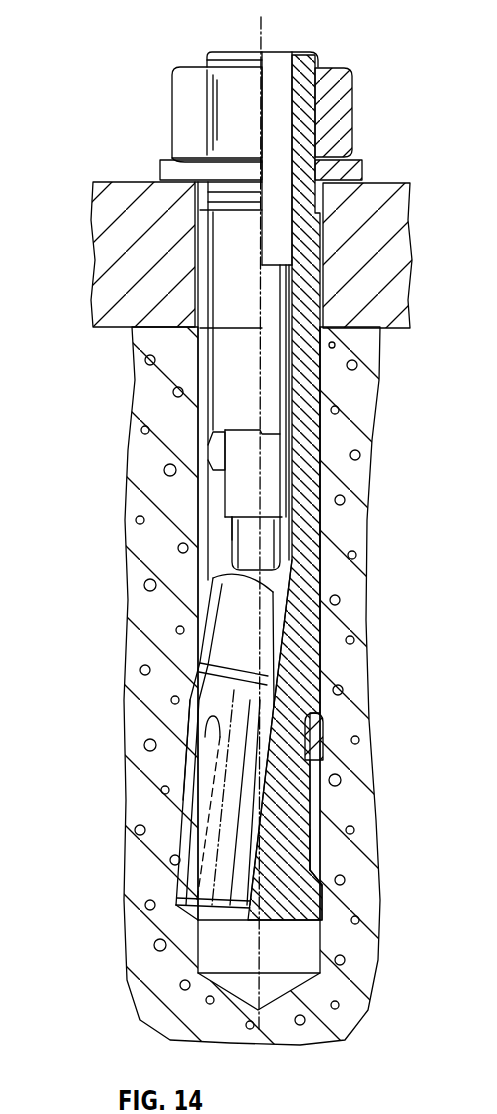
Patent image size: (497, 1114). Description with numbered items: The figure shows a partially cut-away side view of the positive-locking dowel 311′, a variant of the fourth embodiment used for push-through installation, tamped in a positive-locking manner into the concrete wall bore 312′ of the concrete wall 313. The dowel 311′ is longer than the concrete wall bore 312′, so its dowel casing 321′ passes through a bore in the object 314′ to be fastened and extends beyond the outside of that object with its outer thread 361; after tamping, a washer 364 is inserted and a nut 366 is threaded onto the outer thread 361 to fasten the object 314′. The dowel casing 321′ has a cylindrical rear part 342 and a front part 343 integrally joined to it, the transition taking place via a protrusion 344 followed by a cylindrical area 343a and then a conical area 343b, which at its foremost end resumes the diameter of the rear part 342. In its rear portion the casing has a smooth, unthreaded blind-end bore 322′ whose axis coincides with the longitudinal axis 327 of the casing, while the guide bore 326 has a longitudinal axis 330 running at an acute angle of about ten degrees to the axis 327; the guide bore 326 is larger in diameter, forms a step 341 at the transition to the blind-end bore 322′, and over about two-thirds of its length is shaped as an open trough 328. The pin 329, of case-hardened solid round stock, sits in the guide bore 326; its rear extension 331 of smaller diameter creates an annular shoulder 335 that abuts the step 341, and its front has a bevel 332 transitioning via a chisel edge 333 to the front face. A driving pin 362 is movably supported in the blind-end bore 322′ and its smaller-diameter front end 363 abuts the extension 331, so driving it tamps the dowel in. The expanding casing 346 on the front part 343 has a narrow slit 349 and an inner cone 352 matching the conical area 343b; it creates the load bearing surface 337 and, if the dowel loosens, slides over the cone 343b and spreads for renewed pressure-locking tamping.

The longitudinal axis 327 is at (266, 36).
The outer thread 361 is at (318, 62).
The nut 366 is at (343, 110).
The washer 364 is at (352, 172).
The dowel 311′ is at (145, 151).
The object 314′ is at (112, 253).
The blind-end bore 322′ is at (296, 412).
The dowel casing 321′ is at (323, 488).
The cylindrical rear part 342 is at (307, 548).
The guide bore 326 is at (284, 612).
The open trough 328 is at (275, 706).
The protrusion 344 is at (306, 726).
The cylindrical area 343a is at (323, 744).
The expanding casing 346 is at (327, 777).
The slit 349 is at (313, 803).
The conical area 343b is at (308, 846).
The cone 352 is at (312, 863).
The front part 343 is at (298, 898).
The concrete wall bore 312′ is at (327, 952).
The step 341 is at (201, 490).
The concrete wall 313 is at (240, 498).
The driving pin 362 is at (182, 515).
The front end 363 is at (240, 550).
The longitudinal axis of guide bore 330 is at (240, 597).
The extension 331 is at (222, 630).
The annular shoulder 335 is at (197, 660).
The pin 329 is at (203, 730).
The load bearing surface 337 is at (180, 813).
The bevel 332 is at (176, 910).
The chisel edge 333 is at (190, 928).